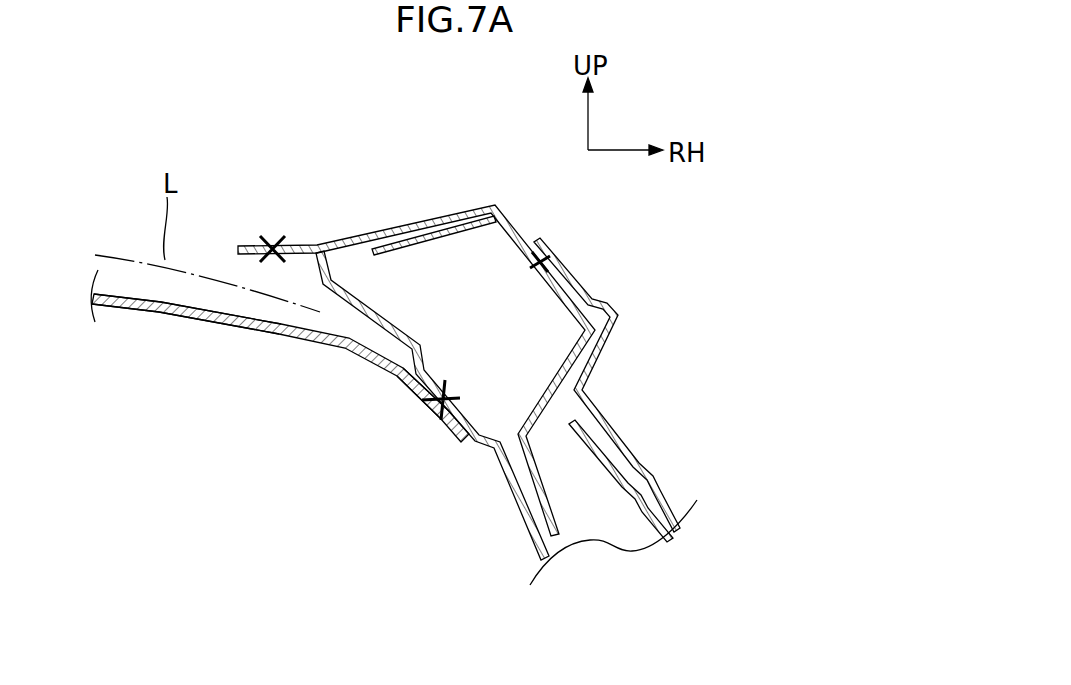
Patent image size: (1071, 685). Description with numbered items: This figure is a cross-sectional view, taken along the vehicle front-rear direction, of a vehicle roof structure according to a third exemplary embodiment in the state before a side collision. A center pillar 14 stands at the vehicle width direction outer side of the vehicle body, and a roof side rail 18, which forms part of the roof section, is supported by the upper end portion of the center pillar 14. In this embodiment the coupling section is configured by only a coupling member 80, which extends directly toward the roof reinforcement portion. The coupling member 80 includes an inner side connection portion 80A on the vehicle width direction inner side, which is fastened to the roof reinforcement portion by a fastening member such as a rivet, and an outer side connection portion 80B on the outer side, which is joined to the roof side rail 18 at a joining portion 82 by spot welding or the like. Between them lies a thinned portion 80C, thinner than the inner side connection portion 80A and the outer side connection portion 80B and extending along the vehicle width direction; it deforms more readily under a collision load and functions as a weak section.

The center pillar 14 is at (610, 437).
The roof side rail 18 is at (457, 206).
The coupling member 80 is at (325, 375).
The inner side connection portion 80A is at (120, 310).
The outer side connection portion 80B is at (395, 377).
The thinned portion 80C is at (220, 318).
The joining portion 82 is at (450, 396).